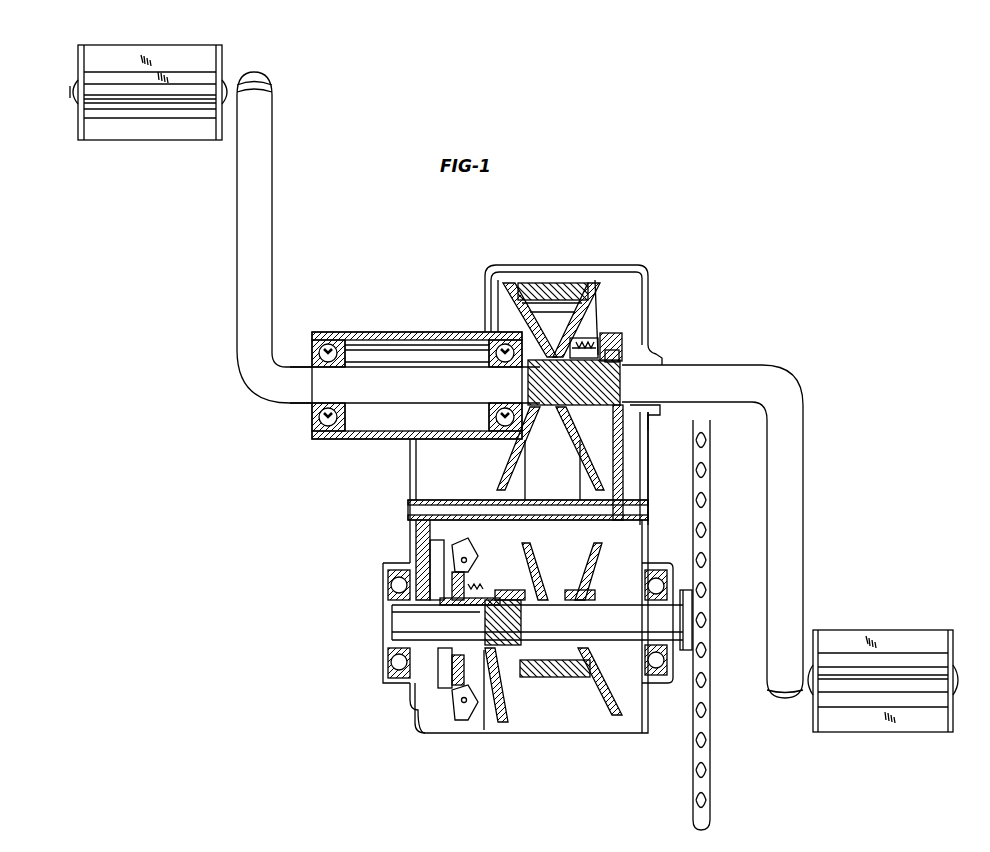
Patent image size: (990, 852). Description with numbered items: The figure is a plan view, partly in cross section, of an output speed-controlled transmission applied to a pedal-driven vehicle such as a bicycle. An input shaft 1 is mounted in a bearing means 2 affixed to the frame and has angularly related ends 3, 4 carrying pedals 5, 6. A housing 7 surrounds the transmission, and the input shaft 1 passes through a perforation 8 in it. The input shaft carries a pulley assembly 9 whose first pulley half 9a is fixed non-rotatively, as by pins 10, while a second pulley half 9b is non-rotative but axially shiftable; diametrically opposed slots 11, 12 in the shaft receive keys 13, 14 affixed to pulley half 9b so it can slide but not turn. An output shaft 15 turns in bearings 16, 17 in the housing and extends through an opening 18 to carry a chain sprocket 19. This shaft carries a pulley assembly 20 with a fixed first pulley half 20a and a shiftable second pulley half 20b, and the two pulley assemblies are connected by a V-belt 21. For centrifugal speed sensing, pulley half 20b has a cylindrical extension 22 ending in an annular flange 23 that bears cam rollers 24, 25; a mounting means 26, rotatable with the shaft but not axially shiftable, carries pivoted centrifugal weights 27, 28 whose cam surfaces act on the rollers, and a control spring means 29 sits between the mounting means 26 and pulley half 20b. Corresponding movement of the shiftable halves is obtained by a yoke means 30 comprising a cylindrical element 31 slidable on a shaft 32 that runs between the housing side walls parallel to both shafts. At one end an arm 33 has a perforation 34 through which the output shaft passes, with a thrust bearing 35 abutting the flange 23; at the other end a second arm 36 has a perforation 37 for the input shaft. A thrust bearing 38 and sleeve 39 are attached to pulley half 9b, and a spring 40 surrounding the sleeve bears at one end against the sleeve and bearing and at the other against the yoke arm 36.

The input shaft 1 is at (400, 396).
The bearing means 2 is at (372, 340).
The angularly related end 3 is at (239, 211).
The angularly related end 4 is at (805, 538).
The pedal 5 is at (140, 141).
The pedal 6 is at (878, 630).
The housing 7 is at (648, 300).
The perforation 8 is at (662, 360).
The pulley assembly 9 is at (488, 288).
The first pulley half 9a is at (497, 306).
The second pulley half 9b is at (597, 307).
The pins 10 is at (528, 372).
The slot 11 is at (620, 362).
The slot 12 is at (615, 390).
The key 13 is at (551, 320).
The key 14 is at (550, 453).
The output shaft 15 is at (395, 633).
The bearing 16 is at (388, 676).
The bearing 17 is at (664, 563).
The opening 18 is at (692, 600).
The chain sprocket 19 is at (712, 800).
The pulley assembly 20 is at (604, 728).
The first pulley half 20a is at (612, 690).
The second pulley half 20b is at (505, 693).
The V-belt 21 is at (545, 283).
The cylindrical extension 22 is at (438, 690).
The annular flange 23 is at (388, 575).
The cam roller 24 is at (430, 556).
The cam roller 25 is at (440, 728).
The mounting means 26 is at (505, 580).
The centrifugal weight 27 is at (464, 538).
The centrifugal weight 28 is at (460, 722).
The control spring means 29 is at (488, 732).
The yoke means 30 is at (566, 494).
The cylindrical element 31 is at (440, 500).
The shaft 32 is at (410, 492).
The arm 33 is at (416, 526).
The perforation 34 is at (440, 600).
The thrust bearing 35 is at (430, 612).
The second arm 36 is at (624, 462).
The perforation 37 is at (655, 412).
The thrust bearing 38 is at (584, 345).
The sleeve 39 is at (648, 440).
The spring 40 is at (625, 345).